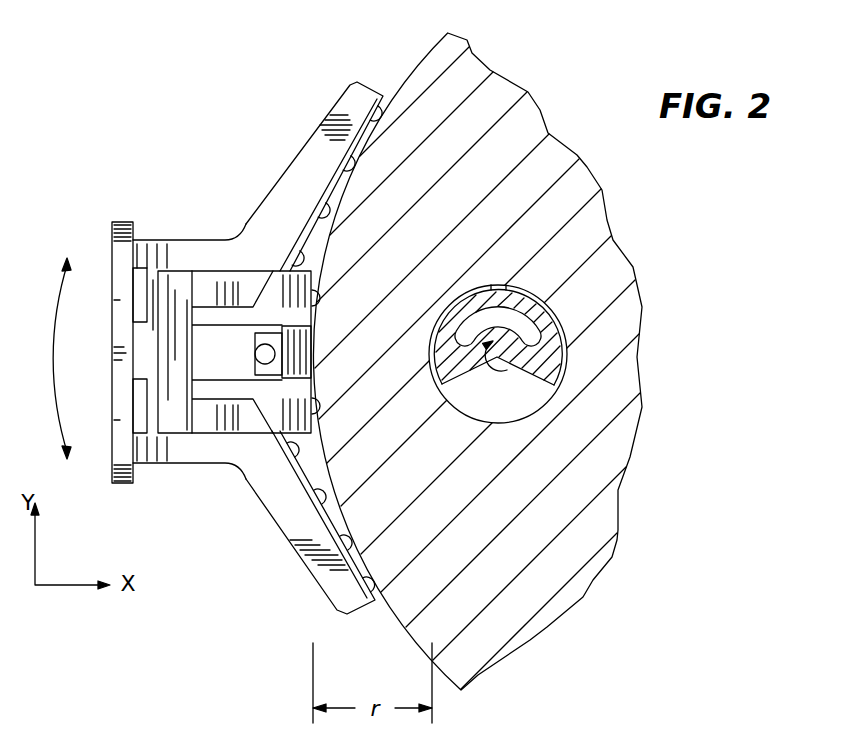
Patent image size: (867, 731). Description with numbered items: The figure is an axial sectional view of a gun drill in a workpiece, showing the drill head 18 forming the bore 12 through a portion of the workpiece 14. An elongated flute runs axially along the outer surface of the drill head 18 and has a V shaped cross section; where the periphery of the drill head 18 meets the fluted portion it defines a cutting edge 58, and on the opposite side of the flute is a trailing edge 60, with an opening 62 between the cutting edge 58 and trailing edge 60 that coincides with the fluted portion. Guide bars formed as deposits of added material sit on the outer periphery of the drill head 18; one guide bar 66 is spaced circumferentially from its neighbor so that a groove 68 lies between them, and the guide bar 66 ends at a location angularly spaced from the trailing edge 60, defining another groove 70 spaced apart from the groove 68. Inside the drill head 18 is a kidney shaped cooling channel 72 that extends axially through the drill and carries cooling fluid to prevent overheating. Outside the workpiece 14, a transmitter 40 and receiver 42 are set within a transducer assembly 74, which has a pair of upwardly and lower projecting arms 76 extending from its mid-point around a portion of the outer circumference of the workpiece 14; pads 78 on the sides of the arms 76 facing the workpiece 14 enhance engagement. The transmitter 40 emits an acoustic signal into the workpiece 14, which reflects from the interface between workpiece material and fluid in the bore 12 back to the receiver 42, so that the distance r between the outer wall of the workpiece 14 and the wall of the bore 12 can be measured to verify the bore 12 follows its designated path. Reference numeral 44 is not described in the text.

The bore 12 is at (548, 400).
The workpiece 14 is at (622, 262).
The drill head 18 is at (565, 323).
The transmitter 40 is at (297, 325).
The receiver 42 is at (257, 268).
The receiving recess 44 is at (558, 388).
The cutting edge 58 is at (540, 398).
The trailing edge 60 is at (450, 397).
The opening 62 is at (499, 398).
The guide bar 66 is at (502, 286).
The groove 68 is at (574, 352).
The groove 70 is at (424, 372).
The cooling channel 72 is at (476, 322).
The transducer assembly 74 is at (213, 493).
The arms 76 is at (317, 127).
The pads 78 is at (384, 98).